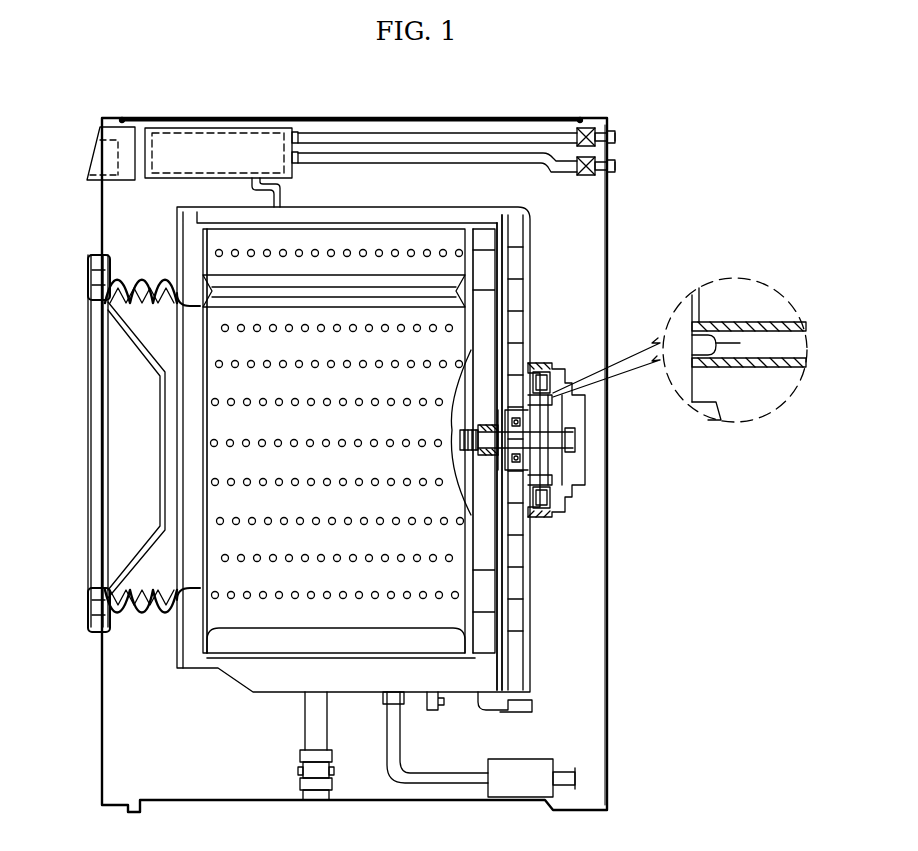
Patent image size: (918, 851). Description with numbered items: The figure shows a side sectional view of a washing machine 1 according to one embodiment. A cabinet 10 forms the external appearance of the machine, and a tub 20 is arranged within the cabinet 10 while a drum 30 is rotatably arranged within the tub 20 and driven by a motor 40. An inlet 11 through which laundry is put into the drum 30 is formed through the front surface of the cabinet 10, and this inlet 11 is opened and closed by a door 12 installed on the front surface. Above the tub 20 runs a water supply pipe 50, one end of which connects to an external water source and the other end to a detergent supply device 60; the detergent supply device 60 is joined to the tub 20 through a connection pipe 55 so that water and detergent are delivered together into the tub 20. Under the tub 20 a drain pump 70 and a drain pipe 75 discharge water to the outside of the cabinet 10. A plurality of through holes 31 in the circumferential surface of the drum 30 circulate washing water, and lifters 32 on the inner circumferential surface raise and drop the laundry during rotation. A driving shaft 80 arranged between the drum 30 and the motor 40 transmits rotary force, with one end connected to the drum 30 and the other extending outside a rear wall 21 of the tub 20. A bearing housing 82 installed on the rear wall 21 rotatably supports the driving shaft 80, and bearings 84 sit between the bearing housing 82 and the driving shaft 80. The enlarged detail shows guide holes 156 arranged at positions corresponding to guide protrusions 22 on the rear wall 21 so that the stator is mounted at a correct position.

The washing machine 1 is at (368, 95).
The cabinet 10 is at (607, 215).
The inlet 11 is at (150, 312).
The door 12 is at (86, 447).
The tub 20 is at (374, 444).
The rear wall 21 is at (505, 329).
The guide protrusions 22 is at (555, 391).
The drum 30 is at (349, 417).
The through holes 31 is at (358, 404).
The lifters 32 is at (356, 632).
The motor 40 is at (633, 382).
The water supply pipe 50 is at (434, 130).
The connection pipe 55 is at (278, 188).
The detergent supply device 60 is at (205, 130).
The drain pump 70 is at (520, 759).
The drain pipe 75 is at (395, 742).
The driving shaft 80 is at (565, 424).
The bearing housing 82 is at (513, 396).
The bearings 84 is at (529, 464).
The guide holes 156 is at (744, 340).